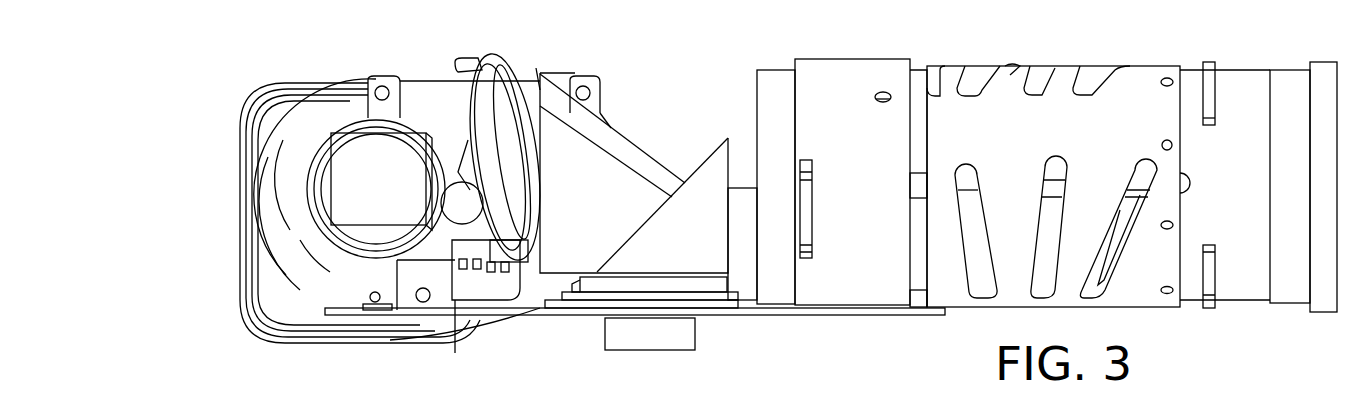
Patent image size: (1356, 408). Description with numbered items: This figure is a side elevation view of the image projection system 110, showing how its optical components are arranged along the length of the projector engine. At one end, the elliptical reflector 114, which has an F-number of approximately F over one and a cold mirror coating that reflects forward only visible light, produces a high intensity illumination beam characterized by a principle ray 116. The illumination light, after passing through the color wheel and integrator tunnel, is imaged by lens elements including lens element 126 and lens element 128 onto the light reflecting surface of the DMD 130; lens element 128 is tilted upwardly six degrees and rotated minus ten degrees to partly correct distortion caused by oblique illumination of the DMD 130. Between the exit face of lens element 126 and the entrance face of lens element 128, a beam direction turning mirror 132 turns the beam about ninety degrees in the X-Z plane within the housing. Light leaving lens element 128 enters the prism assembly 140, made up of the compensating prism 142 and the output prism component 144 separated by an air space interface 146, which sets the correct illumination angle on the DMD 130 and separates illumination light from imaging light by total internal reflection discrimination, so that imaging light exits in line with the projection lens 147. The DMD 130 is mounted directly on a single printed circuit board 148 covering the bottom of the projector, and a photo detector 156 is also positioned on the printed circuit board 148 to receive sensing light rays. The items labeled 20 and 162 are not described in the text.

The laser scanner head 20 is at (536, 68).
The image projection system 110 is at (540, 340).
The elliptical reflector 114 is at (297, 310).
The principle ray 116 is at (535, 150).
The lens element 126 is at (378, 133).
The lens element 128 is at (475, 312).
The DMD 130 is at (705, 287).
The beam direction turning mirror 132 is at (396, 200).
The prism assembly 140 is at (652, 116).
The compensating prism 142 is at (591, 232).
The output prism component 144 is at (701, 248).
The air space interface 146 is at (642, 225).
The projection lens 147 is at (1075, 78).
The printed circuit board 148 is at (777, 316).
The photo detector 156 is at (374, 303).
The partition 162 is at (742, 188).